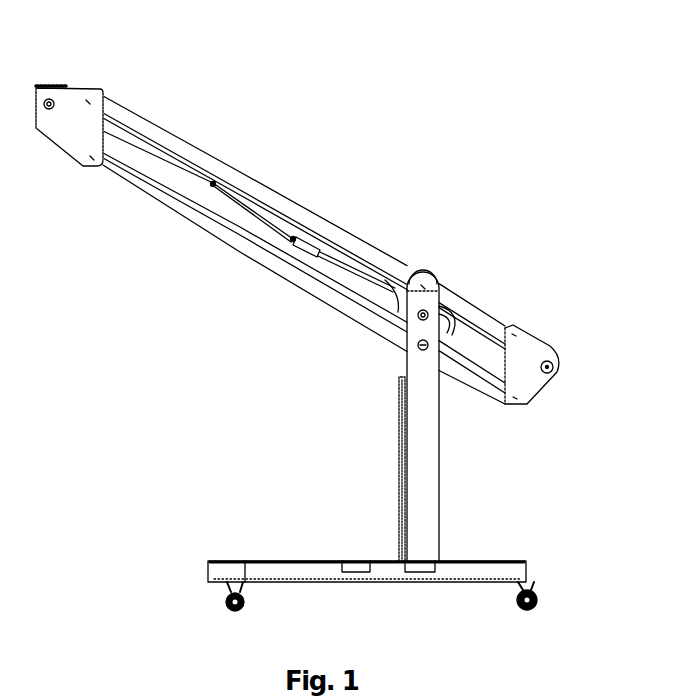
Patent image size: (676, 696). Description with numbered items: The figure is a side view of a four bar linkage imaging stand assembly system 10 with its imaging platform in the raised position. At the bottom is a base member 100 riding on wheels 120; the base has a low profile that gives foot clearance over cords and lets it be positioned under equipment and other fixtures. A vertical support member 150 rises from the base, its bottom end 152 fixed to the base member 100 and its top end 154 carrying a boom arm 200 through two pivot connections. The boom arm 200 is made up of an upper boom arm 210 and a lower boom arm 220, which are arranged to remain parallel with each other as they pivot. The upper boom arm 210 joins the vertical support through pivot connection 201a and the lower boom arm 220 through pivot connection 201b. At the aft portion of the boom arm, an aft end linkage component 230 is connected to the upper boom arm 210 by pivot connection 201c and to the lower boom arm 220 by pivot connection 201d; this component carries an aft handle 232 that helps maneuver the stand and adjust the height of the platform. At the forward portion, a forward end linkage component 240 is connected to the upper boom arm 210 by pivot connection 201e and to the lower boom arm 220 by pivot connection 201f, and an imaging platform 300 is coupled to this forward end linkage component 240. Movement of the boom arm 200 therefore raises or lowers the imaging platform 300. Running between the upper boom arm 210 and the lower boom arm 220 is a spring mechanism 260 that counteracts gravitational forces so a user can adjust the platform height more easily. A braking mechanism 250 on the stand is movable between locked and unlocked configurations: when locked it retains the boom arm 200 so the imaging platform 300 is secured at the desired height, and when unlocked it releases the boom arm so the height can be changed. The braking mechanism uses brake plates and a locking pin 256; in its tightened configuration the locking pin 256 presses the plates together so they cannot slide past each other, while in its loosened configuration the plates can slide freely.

The imaging stand assembly system 10 is at (378, 103).
The base member 100 is at (508, 562).
The wheels 120 is at (225, 602).
The vertical support member 150 is at (441, 455).
The bottom end 152 is at (422, 555).
The top end 154 is at (432, 274).
The boom arm 200 is at (362, 233).
The pivot connection 201a is at (422, 286).
The pivot connection 201b is at (418, 346).
The pivot connection 201c is at (513, 338).
The pivot connection 201d is at (515, 397).
The pivot connection 201e is at (88, 102).
The pivot connection 201f is at (92, 158).
The upper boom arm 210 is at (470, 298).
The lower boom arm 220 is at (308, 283).
The aft end linkage component 230 is at (533, 350).
The aft handle 232 is at (552, 362).
The forward end linkage component 240 is at (65, 132).
The braking mechanism 250 is at (393, 288).
The locking pin 256 is at (418, 318).
The spring mechanism 260 is at (313, 247).
The imaging platform 300 is at (60, 82).